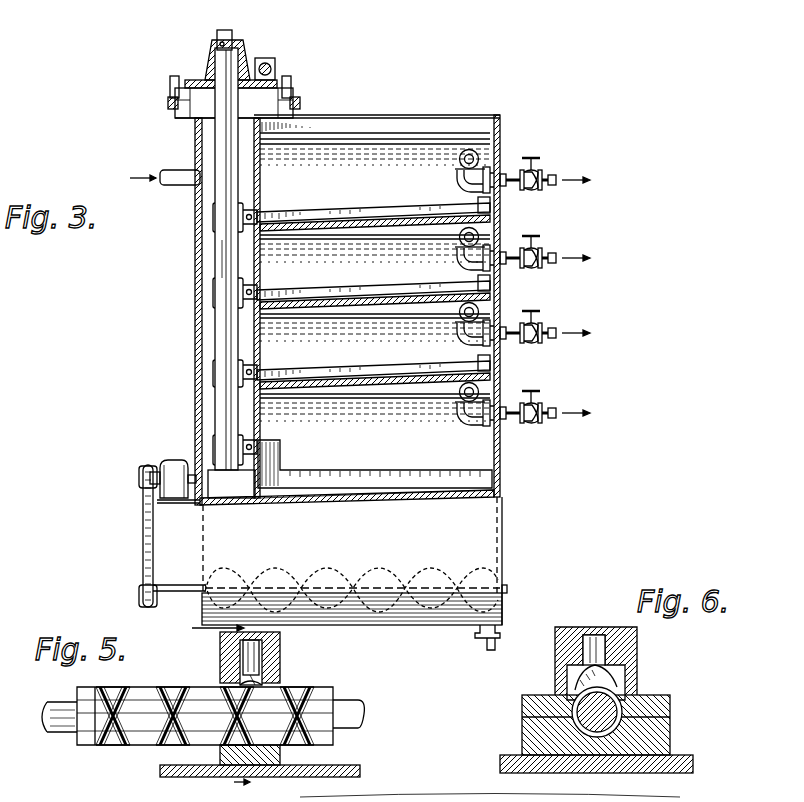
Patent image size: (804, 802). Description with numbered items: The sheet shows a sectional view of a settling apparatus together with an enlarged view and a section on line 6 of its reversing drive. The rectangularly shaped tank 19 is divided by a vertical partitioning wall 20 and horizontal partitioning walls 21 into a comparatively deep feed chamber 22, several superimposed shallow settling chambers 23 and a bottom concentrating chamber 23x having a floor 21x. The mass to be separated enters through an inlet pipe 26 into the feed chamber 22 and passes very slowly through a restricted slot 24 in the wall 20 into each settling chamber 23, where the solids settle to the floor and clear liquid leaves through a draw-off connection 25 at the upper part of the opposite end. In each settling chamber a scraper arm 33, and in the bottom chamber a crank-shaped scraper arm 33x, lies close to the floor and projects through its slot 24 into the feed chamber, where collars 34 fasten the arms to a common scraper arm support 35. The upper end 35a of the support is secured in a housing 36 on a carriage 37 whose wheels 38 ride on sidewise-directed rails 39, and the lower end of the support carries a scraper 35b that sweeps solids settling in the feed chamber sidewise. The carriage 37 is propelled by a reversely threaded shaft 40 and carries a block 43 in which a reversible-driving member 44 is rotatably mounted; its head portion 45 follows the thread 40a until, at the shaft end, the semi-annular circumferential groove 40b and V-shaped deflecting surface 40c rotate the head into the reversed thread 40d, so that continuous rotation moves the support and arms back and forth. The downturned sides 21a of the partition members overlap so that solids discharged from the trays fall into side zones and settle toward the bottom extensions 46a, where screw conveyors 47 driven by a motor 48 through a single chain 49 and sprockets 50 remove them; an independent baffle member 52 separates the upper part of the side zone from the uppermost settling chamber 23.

In FIG. 3, the tank 19 is at (506, 279).
In FIG. 3, the vertical partitioning wall 20 is at (262, 182).
In FIG. 3, the horizontal partitioning wall 21 is at (430, 212).
In FIG. 3, the downwardly turned side 21a is at (503, 360).
In FIG. 3, the floor of bottom chamber 21x is at (355, 498).
In FIG. 3, the feed chamber 22 is at (198, 150).
In FIG. 3, the settling chamber 23 is at (440, 150).
In FIG. 3, the bottom concentrating chamber 23x is at (432, 497).
In FIG. 3, the restricted slot 24 is at (262, 202).
In FIG. 3, the draw-off connection 25 is at (470, 148).
In FIG. 3, the inlet pipe 26 is at (172, 188).
In FIG. 3, the scraper arm 33 is at (368, 206).
In FIG. 3, the scraper arm of bottom chamber 33x is at (378, 470).
In FIG. 3, the collar 34 is at (220, 218).
In FIG. 3, the scraper arm support 35 is at (225, 252).
In FIG. 3, the upper end of support 35a is at (232, 42).
In FIG. 3, the scraper 35b is at (232, 498).
In FIG. 3, the housing 36 is at (248, 56).
In FIG. 3, the carriage 37 is at (190, 82).
In FIG. 5, the carriage 37 is at (360, 770).
In FIG. 6, the carriage 37 is at (690, 762).
In FIG. 3, the wheel 38 is at (172, 80).
In FIG. 3, the rail 39 is at (170, 108).
In FIG. 3, the shaft 40 is at (272, 68).
In FIG. 5, the shaft 40 is at (136, 700).
In FIG. 6, the shaft 40 is at (615, 716).
In FIG. 5, the thread 40a is at (215, 750).
In FIG. 6, the thread 40a is at (572, 713).
In FIG. 5, the semi-annular circumferential groove 40b is at (338, 705).
In FIG. 5, the V-shaped deflecting surface 40c is at (335, 730).
In FIG. 5, the reversed thread 40d is at (330, 746).
In FIG. 3, the block 43 is at (272, 62).
In FIG. 5, the block 43 is at (220, 648).
In FIG. 6, the block 43 is at (635, 652).
In FIG. 5, the reversible-driving member 44 is at (262, 652).
In FIG. 6, the reversible-driving member 44 is at (596, 634).
In FIG. 5, the head portion 45 is at (262, 680).
In FIG. 6, the head portion 45 is at (622, 682).
In FIG. 3, the bottom extension 46a is at (480, 556).
In FIG. 3, the screw conveyor 47 is at (322, 572).
In FIG. 3, the motor 48 is at (170, 462).
In FIG. 3, the chain 49 is at (143, 536).
In FIG. 3, the sprocket 50 is at (139, 480).
In FIG. 3, the baffle member 52 is at (412, 145).
In FIG. 3, the section line 6 is at (214, 704).